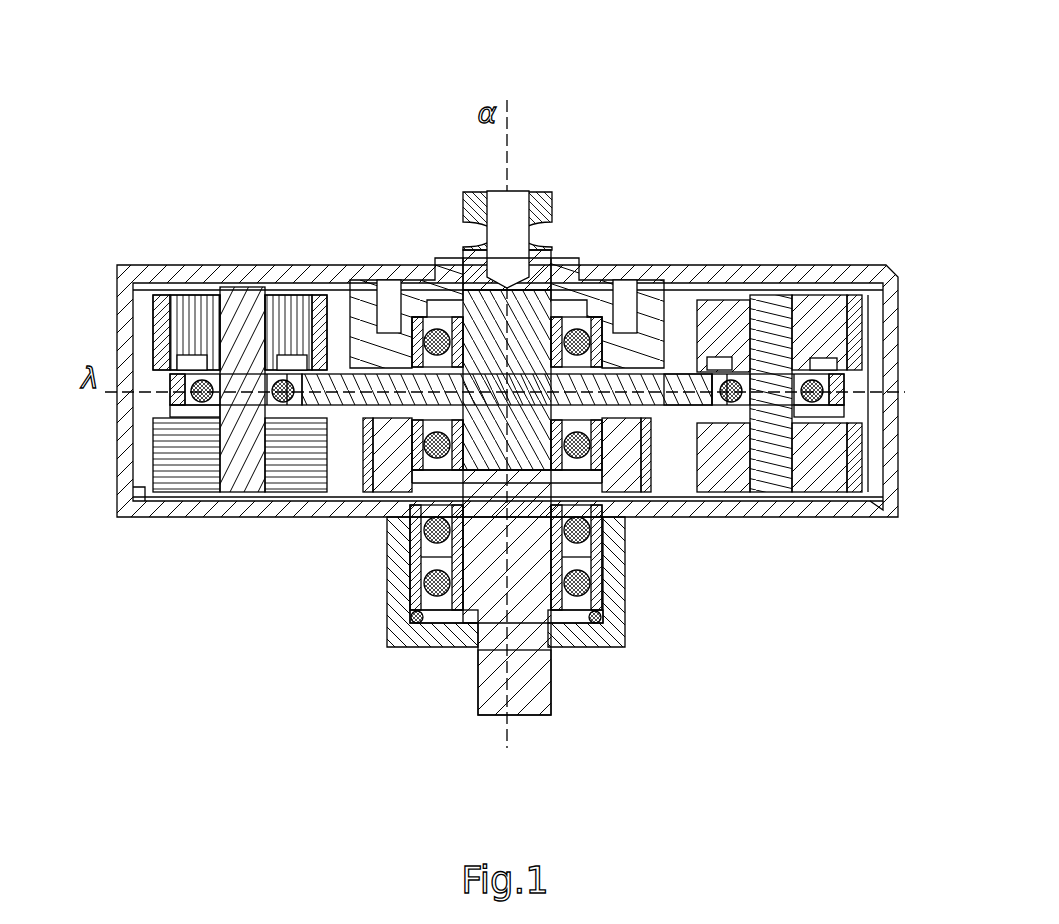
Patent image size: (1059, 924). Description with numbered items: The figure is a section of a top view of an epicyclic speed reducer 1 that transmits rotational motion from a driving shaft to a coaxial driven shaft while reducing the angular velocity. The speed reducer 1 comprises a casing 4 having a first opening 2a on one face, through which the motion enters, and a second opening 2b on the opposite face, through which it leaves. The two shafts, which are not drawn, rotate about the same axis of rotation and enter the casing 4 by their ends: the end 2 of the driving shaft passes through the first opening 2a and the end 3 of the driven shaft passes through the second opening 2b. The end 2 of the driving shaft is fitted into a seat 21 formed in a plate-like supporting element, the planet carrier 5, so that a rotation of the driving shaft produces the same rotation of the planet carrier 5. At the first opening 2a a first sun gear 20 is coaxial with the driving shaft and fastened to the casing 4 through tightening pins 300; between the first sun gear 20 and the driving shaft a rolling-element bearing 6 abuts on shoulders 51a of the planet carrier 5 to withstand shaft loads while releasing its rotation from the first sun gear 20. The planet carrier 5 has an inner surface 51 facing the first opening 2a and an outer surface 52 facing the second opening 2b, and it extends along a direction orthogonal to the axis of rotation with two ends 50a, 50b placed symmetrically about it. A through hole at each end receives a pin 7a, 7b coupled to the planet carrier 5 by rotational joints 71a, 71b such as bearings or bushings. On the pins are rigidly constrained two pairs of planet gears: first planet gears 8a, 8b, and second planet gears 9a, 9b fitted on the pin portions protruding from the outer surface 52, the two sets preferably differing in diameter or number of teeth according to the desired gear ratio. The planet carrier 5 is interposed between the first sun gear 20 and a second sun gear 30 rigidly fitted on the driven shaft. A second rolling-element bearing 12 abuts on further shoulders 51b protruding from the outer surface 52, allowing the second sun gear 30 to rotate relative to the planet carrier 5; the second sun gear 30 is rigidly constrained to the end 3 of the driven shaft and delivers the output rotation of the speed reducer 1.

The speed reducer 1 is at (209, 106).
The end of the driving shaft 2 is at (506, 422).
The first opening 2a is at (462, 275).
The second opening 2b is at (553, 647).
The end of the driven shaft 3 is at (497, 665).
The casing 4 is at (297, 267).
The planet carrier 5 is at (513, 367).
The rolling-element bearing 6 is at (585, 262).
The pin 7a is at (238, 323).
The pin 7b is at (771, 322).
The first planet gear 8a is at (183, 310).
The first planet gear 8b is at (823, 330).
The second planet gear 9a is at (195, 462).
The second planet gear 9b is at (818, 472).
The second rolling-element bearing 12 is at (585, 448).
The first sun gear 20 is at (430, 288).
The seat 21 is at (528, 272).
The second sun gear 30 is at (507, 513).
The end of the planet carrier 50a is at (170, 387).
The end of the planet carrier 50b is at (845, 393).
The inner surface 51 is at (672, 380).
The shoulders 51a is at (463, 330).
The further shoulders 51b is at (465, 455).
The outer surface 52 is at (342, 403).
The rotational joint 71a is at (192, 393).
The rotational joint 71b is at (822, 398).
The tightening pins 300 is at (393, 312).